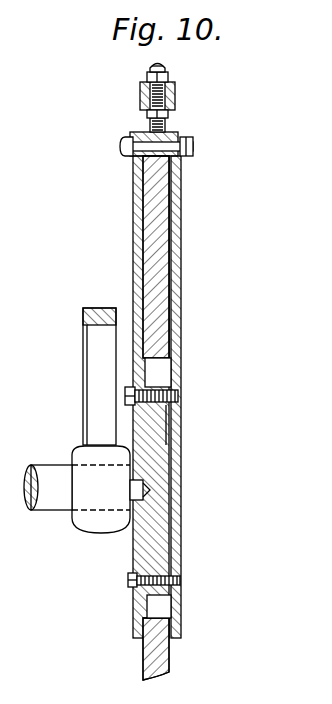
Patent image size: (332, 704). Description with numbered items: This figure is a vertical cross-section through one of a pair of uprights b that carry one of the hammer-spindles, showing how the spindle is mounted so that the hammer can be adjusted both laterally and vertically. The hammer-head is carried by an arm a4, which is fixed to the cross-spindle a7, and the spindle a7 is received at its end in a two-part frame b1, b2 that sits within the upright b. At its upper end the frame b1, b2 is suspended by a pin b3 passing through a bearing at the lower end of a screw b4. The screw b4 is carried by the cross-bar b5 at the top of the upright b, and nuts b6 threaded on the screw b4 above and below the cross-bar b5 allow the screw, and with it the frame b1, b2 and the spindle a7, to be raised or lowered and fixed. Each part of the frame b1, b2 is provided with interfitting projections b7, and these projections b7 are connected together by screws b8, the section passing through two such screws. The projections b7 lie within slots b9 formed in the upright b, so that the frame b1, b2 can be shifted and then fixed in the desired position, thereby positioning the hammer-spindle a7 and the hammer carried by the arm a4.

The upright b is at (170, 666).
The frame b1 is at (133, 250).
The frame b2 is at (181, 250).
The pin b3 is at (121, 146).
The screw b4 is at (165, 66).
The cross-bar b5 is at (175, 95).
The nuts b6 is at (148, 76).
The interfitting projections b7 is at (166, 418).
The screws b8 is at (181, 578).
The slots b9 is at (160, 372).
The arm a4 is at (99, 376).
The cross-spindle a7 is at (48, 487).